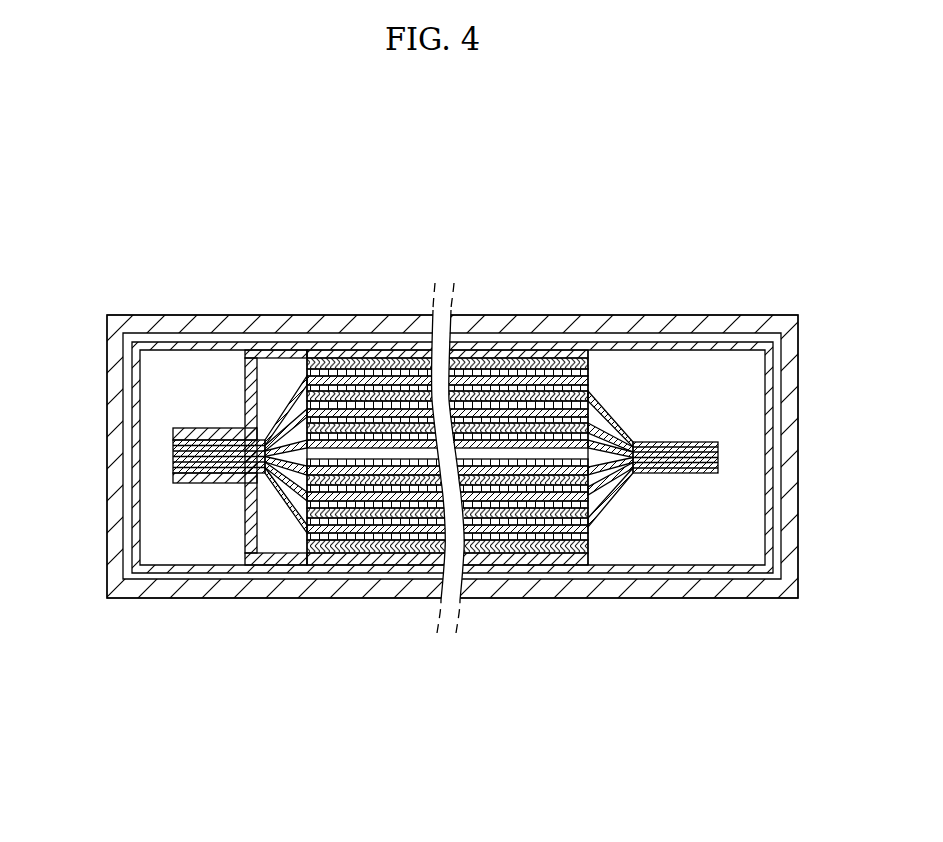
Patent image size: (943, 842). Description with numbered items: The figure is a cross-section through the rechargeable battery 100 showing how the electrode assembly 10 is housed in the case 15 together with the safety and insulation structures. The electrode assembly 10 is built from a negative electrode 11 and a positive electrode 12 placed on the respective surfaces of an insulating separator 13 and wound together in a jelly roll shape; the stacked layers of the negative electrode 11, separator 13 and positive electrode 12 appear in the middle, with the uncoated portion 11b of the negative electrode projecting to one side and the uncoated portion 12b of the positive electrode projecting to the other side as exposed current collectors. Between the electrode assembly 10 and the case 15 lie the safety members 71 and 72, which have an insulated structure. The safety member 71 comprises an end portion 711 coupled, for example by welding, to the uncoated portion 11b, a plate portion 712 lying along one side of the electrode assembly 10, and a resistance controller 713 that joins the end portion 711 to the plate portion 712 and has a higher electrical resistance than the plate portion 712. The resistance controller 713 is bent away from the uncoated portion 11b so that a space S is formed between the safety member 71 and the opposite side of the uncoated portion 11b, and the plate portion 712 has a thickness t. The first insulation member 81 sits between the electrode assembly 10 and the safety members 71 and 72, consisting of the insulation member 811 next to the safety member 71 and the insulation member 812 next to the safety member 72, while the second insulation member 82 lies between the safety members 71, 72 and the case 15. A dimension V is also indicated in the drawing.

The rechargeable battery 100 is at (451, 195).
The electrode assembly 10 is at (447, 453).
The negative electrode 11 is at (327, 383).
The uncoated portion of the negative electrode 11b is at (204, 440).
The positive electrode 12 is at (405, 392).
The uncoated portion of the positive electrode 12b is at (688, 442).
The separator 13 is at (365, 388).
The case 15 is at (350, 589).
The safety member 71 is at (228, 538).
The end portion 711 is at (188, 484).
The plate portion 712 is at (307, 557).
The resistance controller 713 is at (268, 567).
The safety member 72 is at (496, 350).
The first insulation member 81 is at (756, 732).
The insulation member 811 is at (557, 552).
The insulation member 812 is at (563, 367).
The second insulation member 82 is at (684, 573).
The space S is at (175, 459).
The gap distance V is at (277, 522).
The thickness t is at (590, 553).